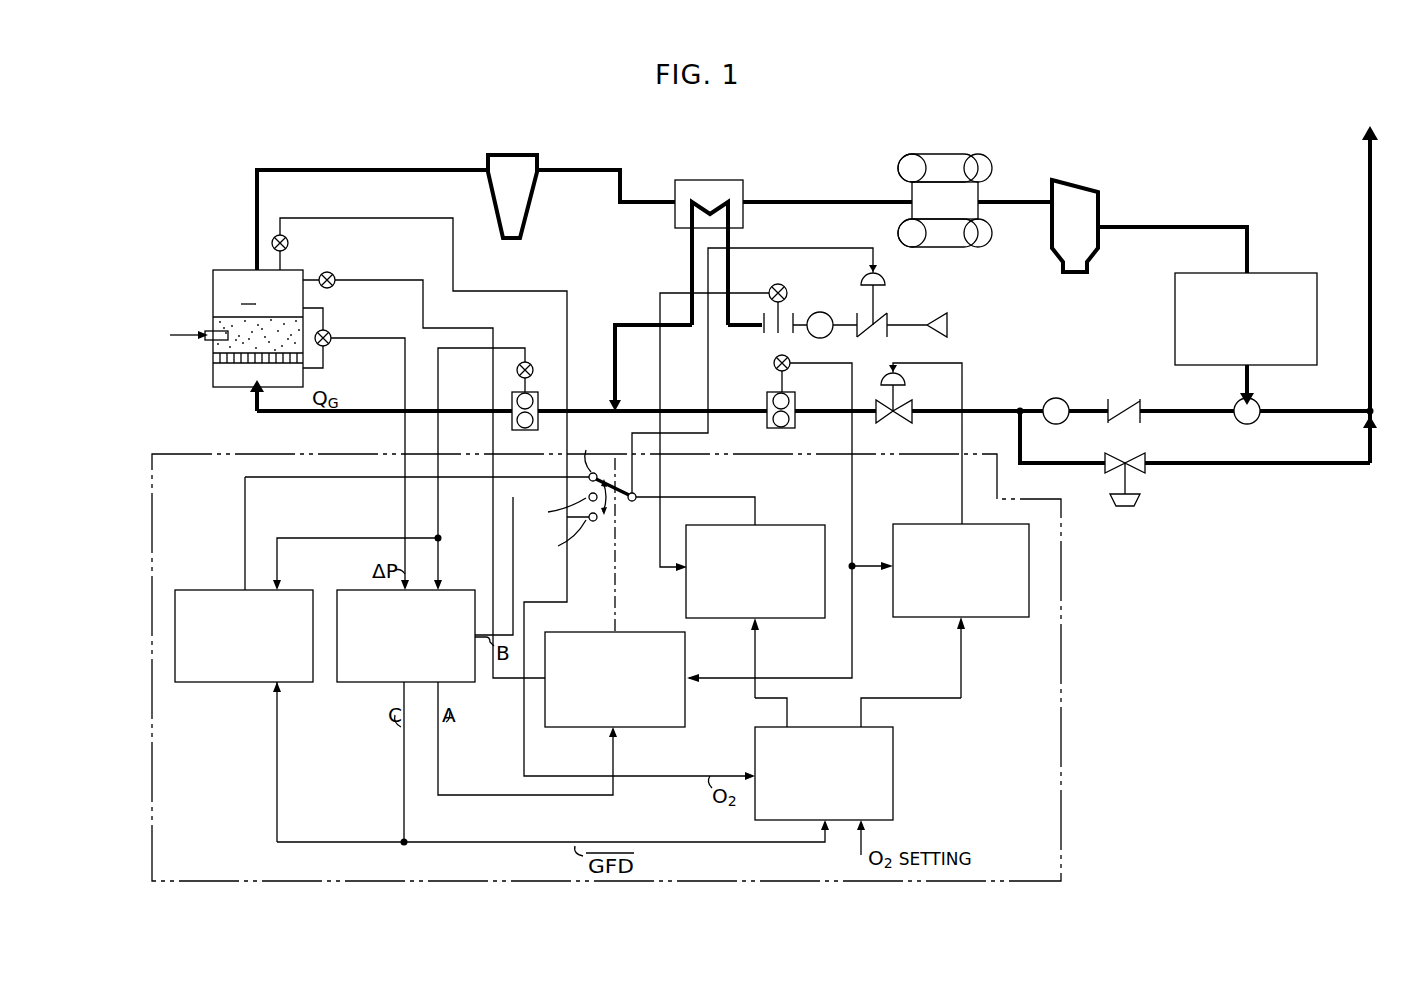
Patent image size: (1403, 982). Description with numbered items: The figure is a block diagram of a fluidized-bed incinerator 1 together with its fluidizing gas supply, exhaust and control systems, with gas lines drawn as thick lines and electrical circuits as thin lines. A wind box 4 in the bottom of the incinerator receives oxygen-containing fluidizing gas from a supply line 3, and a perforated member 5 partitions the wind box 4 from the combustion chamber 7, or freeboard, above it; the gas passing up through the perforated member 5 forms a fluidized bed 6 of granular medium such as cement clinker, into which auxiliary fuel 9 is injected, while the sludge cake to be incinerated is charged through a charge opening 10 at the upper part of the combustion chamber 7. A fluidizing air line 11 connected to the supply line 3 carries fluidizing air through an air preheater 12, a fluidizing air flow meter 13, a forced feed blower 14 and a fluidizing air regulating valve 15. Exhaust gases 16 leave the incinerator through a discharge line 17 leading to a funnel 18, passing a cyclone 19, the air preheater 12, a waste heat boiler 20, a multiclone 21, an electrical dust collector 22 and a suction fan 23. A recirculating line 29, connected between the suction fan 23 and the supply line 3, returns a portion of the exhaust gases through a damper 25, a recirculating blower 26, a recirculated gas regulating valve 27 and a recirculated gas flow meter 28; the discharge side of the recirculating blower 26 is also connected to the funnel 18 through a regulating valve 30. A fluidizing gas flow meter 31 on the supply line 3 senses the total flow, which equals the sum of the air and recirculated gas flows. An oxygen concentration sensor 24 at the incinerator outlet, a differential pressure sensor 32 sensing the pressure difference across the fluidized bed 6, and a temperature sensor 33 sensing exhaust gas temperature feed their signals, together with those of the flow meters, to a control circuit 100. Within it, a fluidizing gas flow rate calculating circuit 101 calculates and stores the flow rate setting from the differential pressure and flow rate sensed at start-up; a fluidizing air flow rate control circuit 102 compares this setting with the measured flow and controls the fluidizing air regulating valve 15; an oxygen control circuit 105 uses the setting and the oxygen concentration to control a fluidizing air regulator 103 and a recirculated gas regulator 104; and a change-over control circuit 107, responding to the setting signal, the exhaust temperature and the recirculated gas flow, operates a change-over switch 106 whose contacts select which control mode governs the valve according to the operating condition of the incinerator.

The fluidized-bed incinerator 1 is at (203, 289).
The supply line 3 is at (275, 412).
The wind box 4 is at (222, 392).
The perforated member 5 is at (213, 368).
The fluidized bed 6 is at (213, 318).
The combustion chamber 7 is at (248, 294).
The auxiliary fuel 9 is at (189, 337).
The charge opening 10 is at (235, 267).
The fluidizing air line 11 is at (730, 236).
The air preheater 12 is at (751, 183).
The fluidizing air flow meter 13 is at (778, 290).
The forced feed blower 14 is at (823, 312).
The fluidizing air regulating valve 15 is at (885, 278).
The exhaust gases 16 is at (1211, 227).
The discharge line 17 is at (312, 170).
The funnel 18 is at (1374, 228).
The cyclone 19 is at (537, 161).
The waste heat boiler 20 is at (900, 187).
The multiclone 21 is at (1098, 215).
The electrical dust collector 22 is at (1286, 268).
The suction fan 23 is at (1257, 420).
The oxygen concentration sensor 24 is at (288, 248).
The damper 25 is at (1116, 397).
The recirculating blower 26 is at (1048, 401).
The recirculated gas regulating valve 27 is at (913, 403).
The recirculated gas flow meter 28 is at (795, 425).
The recirculating line 29 is at (1172, 412).
The regulating valve 30 is at (1141, 500).
The fluidizing gas flow meter 31 is at (527, 368).
The differential pressure sensor 32 is at (332, 340).
The temperature sensor 33 is at (332, 282).
The control circuit 100 is at (1060, 667).
The fluidizing gas flow rate calculating circuit 101 is at (358, 590).
The fluidizing air flow rate control circuit 102 is at (218, 590).
The fluidizing air regulator 103 is at (785, 525).
The recirculated gas regulator 104 is at (908, 524).
The O2-control circuit 105 is at (893, 746).
The change-over switch 106 is at (640, 490).
The change-over control circuit 107 is at (613, 632).